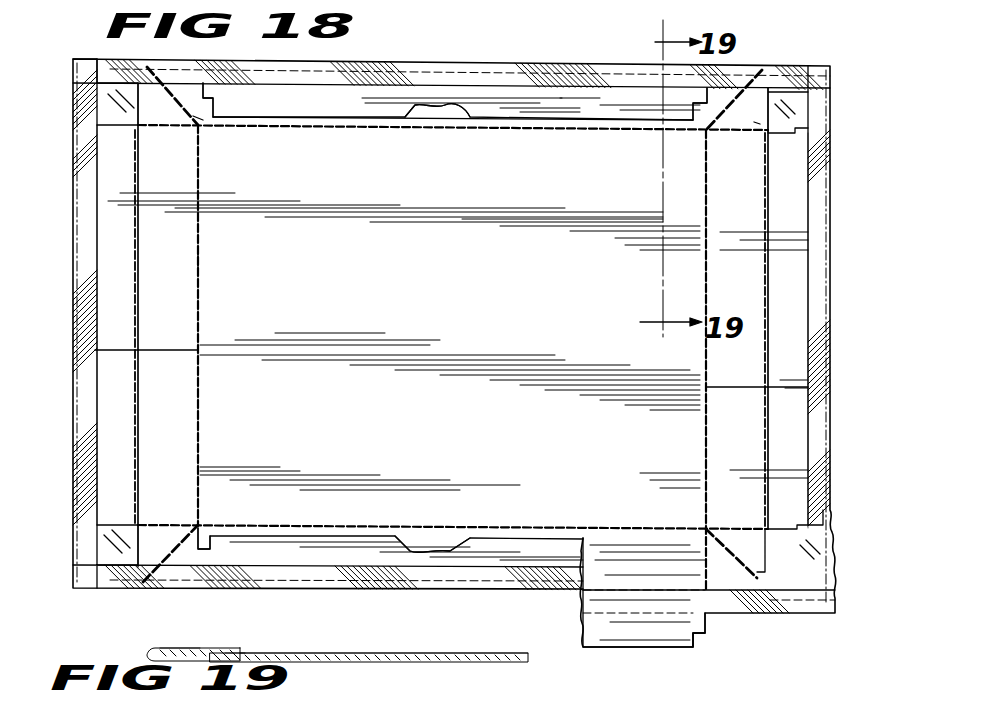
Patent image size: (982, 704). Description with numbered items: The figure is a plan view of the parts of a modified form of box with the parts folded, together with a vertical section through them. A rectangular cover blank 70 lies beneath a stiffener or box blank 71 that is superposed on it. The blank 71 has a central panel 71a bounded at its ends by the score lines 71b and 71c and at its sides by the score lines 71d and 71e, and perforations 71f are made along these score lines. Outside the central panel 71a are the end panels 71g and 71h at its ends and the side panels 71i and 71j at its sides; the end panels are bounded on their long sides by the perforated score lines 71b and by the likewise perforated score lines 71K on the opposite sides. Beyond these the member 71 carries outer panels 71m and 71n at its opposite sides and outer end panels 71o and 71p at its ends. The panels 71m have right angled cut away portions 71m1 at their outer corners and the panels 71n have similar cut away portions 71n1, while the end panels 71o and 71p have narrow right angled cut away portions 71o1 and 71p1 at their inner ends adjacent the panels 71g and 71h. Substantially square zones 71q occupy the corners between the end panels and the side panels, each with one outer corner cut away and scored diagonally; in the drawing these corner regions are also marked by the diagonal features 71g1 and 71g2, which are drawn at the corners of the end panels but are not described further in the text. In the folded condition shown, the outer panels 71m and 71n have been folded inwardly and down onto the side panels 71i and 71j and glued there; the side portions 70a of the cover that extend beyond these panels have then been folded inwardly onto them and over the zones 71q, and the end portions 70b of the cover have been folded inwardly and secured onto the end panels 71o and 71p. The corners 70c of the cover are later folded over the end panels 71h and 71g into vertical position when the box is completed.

In FIG. 18, the cover blank 70 is at (831, 613).
In FIG. 19, the cover blank 70 is at (382, 662).
In FIG. 18, the side portions of the cover 70a is at (443, 74).
In FIG. 19, the side portions of the cover 70a is at (156, 648).
In FIG. 18, the end portions of the cover 70b is at (94, 298).
In FIG. 18, the corners 70c is at (80, 68).
In FIG. 18, the stiffener or box blank 71 is at (533, 150).
In FIG. 18, the central panel 71a is at (470, 296).
In FIG. 19, the central panel 71a is at (330, 654).
In FIG. 18, the score line 71b is at (198, 404).
In FIG. 18, the score line 71c is at (706, 364).
In FIG. 18, the score line 71d is at (608, 508).
In FIG. 18, the score line 71e is at (298, 128).
In FIG. 18, the perforations 71f is at (200, 276).
In FIG. 18, the end panel 71g is at (150, 93).
In FIG. 18, the corner brace end 71g1 is at (140, 80).
In FIG. 18, the corner brace fastener 71g2 is at (183, 124).
In FIG. 18, the end panel 71h is at (756, 286).
In FIG. 18, the side panel 71i is at (446, 530).
In FIG. 18, the side panel 71j is at (436, 121).
In FIG. 19, the side panel 71j is at (232, 654).
In FIG. 18, the score lines 71K is at (136, 330).
In FIG. 18, the outer panel 71m is at (654, 636).
In FIG. 18, the right angled cut away portions 71m1 is at (200, 534).
In FIG. 18, the outer panel 71n is at (596, 124).
In FIG. 19, the outer panel 71n is at (208, 646).
In FIG. 18, the right angled cut away portions 71n1 is at (212, 96).
In FIG. 18, the end panel 71o is at (804, 272).
In FIG. 18, the narrow right angled cut away portions 71o1 is at (780, 134).
In FIG. 18, the end panel 71p is at (128, 430).
In FIG. 18, the narrow right angled cut away portions 71p1 is at (140, 138).
In FIG. 18, the zones 71q is at (180, 236).